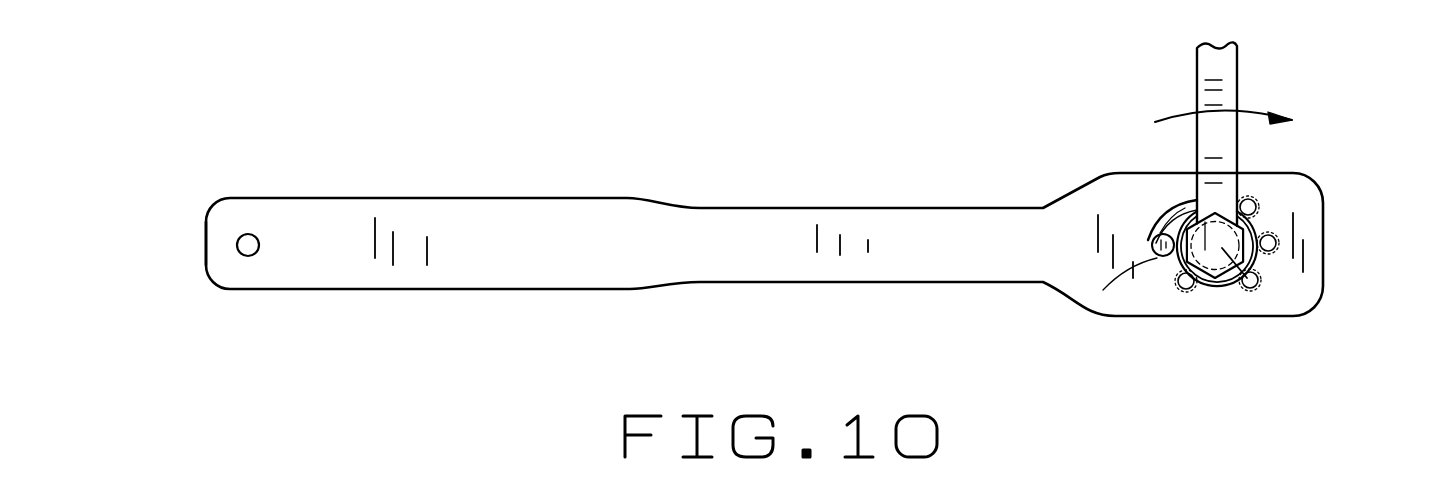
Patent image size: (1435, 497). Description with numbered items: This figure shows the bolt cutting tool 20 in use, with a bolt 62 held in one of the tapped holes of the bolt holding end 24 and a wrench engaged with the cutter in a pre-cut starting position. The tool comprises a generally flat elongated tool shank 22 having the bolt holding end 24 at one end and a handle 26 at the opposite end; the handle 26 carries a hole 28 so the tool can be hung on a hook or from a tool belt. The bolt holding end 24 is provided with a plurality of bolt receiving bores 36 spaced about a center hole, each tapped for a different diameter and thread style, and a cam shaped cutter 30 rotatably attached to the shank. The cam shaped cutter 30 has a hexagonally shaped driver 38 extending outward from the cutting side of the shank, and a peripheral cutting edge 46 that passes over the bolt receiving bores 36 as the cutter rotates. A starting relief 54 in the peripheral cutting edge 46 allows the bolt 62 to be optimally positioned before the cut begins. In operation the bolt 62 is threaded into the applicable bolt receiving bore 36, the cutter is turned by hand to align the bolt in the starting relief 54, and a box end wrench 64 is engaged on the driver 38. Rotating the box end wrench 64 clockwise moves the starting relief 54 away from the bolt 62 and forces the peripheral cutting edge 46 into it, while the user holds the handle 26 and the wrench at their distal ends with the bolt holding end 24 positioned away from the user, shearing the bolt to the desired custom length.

The bolt cutting tool 20 is at (702, 178).
The tool shank 22 is at (820, 208).
The bolt holding end 24 is at (1323, 232).
The handle 26 is at (206, 249).
The hole 28 is at (252, 235).
The cam shaped cutter 30 is at (1165, 210).
The bolt receiving bores 36 is at (1250, 200).
The hexagonally shaped driver 38 is at (1250, 284).
The peripheral cutting edge 46 is at (1210, 287).
The starting relief 54 is at (1152, 246).
The bolt 62 is at (1103, 290).
The box end wrench 64 is at (1238, 80).